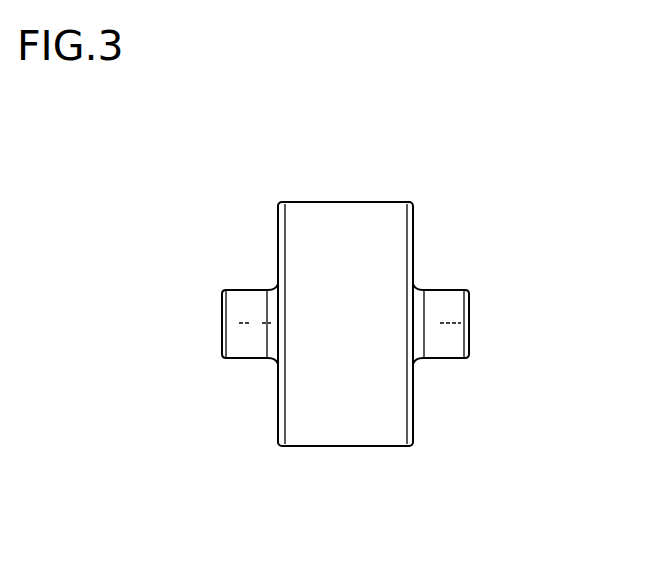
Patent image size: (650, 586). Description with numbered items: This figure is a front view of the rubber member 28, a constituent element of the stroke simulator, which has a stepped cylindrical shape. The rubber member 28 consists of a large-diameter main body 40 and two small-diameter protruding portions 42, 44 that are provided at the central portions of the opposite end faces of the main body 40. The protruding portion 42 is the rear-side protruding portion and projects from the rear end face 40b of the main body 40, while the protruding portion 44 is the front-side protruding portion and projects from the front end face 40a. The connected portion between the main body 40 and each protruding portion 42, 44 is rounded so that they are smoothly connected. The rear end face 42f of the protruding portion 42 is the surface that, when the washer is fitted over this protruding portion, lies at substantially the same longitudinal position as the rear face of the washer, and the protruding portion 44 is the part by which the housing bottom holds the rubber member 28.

The rubber member 28 is at (342, 188).
The main body 40 is at (352, 250).
The front end face of the main body 40a is at (275, 383).
The rear end face of the main body 40b is at (417, 243).
The protruding portion 42 is at (448, 340).
The rear end face of the protruding portion 42f is at (470, 338).
The protruding portion 44 is at (239, 298).